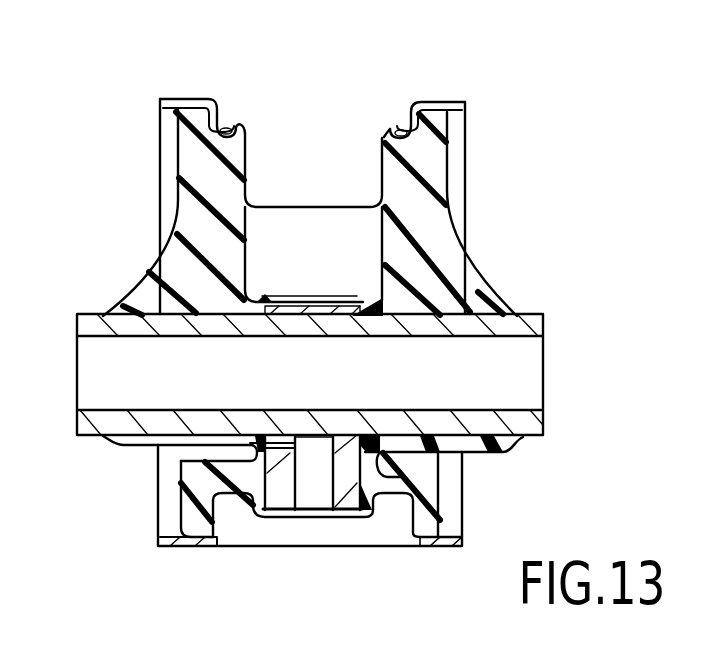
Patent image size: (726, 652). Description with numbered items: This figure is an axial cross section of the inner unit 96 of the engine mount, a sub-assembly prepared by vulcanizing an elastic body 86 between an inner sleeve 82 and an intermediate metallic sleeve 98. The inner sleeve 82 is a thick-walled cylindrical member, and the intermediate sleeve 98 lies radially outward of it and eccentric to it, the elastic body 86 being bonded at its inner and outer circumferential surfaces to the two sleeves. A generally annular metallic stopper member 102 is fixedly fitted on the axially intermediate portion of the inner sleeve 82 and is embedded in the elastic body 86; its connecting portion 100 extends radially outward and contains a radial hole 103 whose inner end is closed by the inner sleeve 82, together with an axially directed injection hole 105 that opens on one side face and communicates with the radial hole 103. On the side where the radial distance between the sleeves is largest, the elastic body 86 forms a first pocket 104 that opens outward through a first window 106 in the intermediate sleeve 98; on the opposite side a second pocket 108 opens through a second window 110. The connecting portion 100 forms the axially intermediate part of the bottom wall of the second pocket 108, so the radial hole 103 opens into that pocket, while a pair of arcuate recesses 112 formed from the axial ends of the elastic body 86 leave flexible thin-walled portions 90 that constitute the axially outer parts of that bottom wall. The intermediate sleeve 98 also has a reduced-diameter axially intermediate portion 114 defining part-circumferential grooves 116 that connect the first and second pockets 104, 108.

The inner sleeve 82 is at (81, 422).
The elastic body 86 is at (432, 163).
The thin-walled portions 90 is at (200, 480).
The inner unit 96 is at (455, 63).
The intermediate metallic sleeve 98 is at (190, 80).
The connecting portion 100 is at (343, 486).
The stopper member 102 is at (271, 530).
The radial hole 103 is at (310, 488).
The first pocket 104 is at (386, 241).
The injection hole 105 is at (280, 442).
The first window 106 is at (241, 134).
The second pocket 108 is at (404, 534).
The second window 110 is at (217, 545).
The arcuate recesses 112 is at (207, 455).
The axially intermediate portion 114 is at (402, 132).
The part-circumferential grooves 116 is at (233, 127).